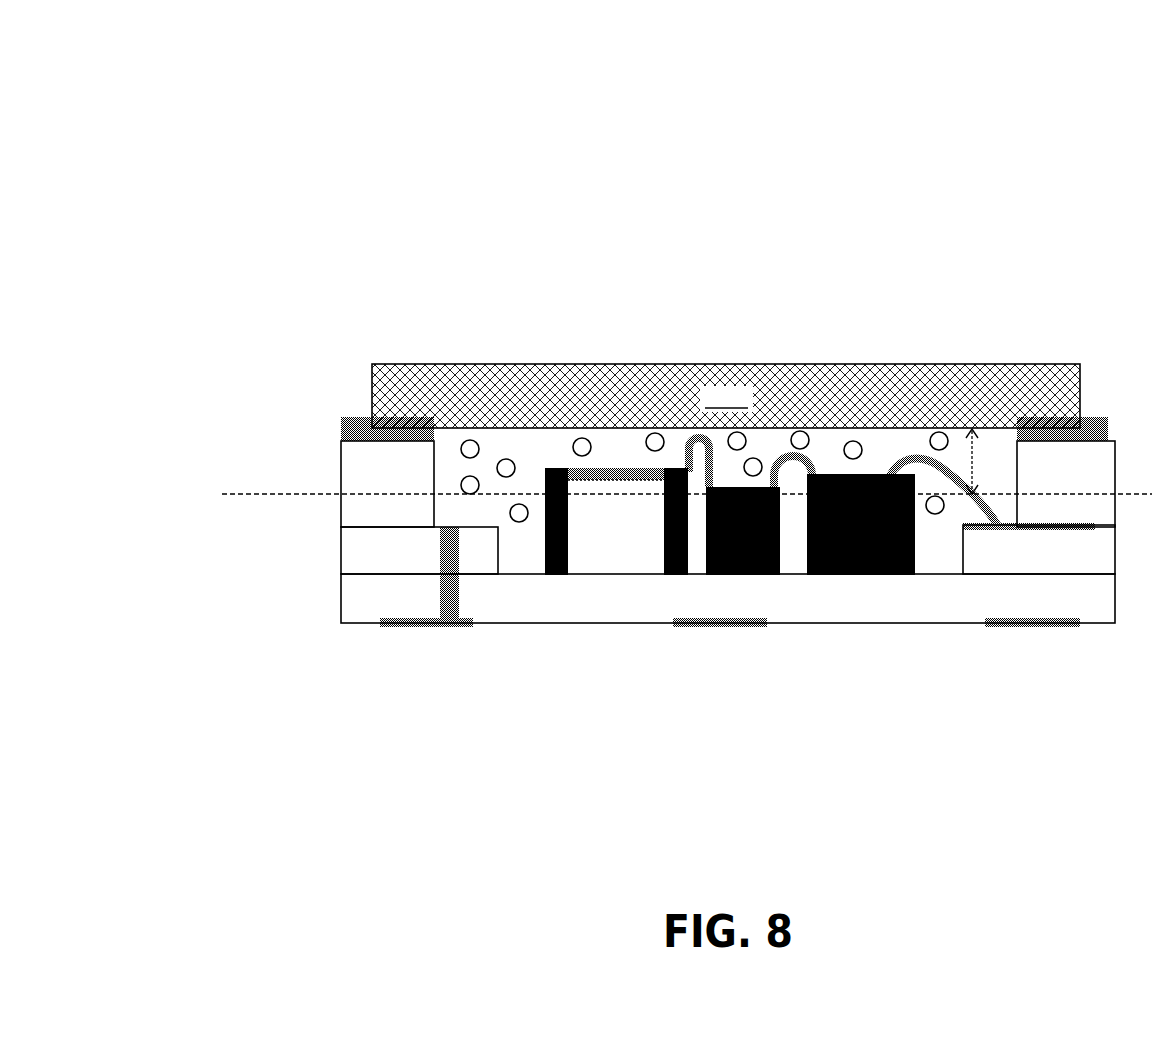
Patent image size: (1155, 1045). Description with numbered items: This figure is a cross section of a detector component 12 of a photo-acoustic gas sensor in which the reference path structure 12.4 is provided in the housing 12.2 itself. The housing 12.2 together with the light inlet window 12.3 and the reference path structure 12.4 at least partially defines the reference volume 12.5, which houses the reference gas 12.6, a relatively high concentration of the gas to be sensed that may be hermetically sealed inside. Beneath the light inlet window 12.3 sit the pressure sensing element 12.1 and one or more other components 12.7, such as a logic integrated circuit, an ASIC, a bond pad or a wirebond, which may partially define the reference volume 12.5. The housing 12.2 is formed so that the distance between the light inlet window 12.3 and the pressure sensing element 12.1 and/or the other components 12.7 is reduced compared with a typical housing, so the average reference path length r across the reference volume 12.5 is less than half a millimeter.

The detector component 12 is at (210, 52).
The pressure sensing element 12.1 is at (640, 542).
The housing 12.2 is at (347, 503).
The light inlet window 12.3 is at (748, 408).
The reference path structure 12.4 is at (347, 598).
The reference volume 12.5 is at (888, 450).
The reference gas 12.6 is at (467, 441).
The other components 12.7 is at (857, 575).